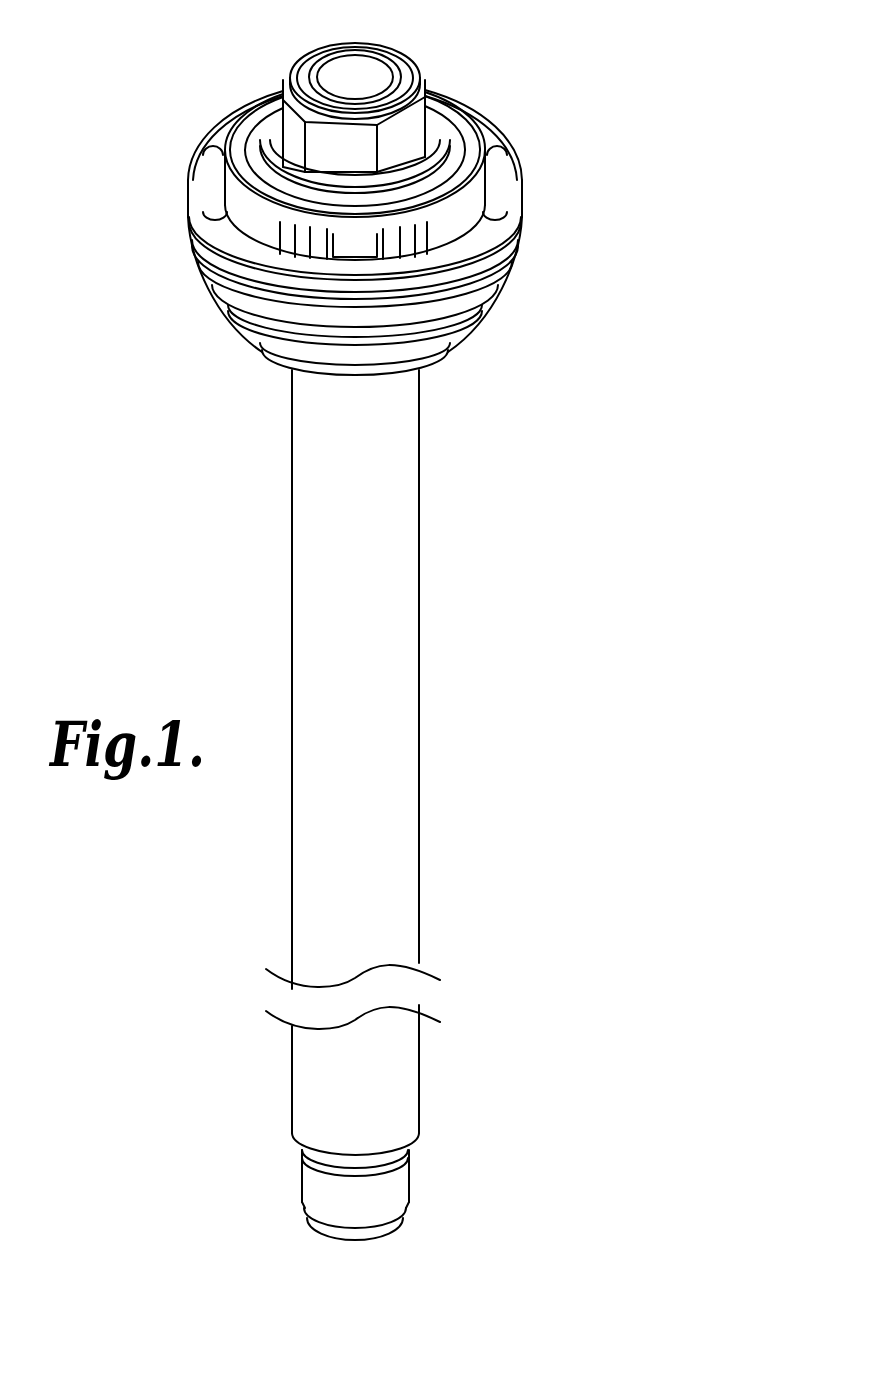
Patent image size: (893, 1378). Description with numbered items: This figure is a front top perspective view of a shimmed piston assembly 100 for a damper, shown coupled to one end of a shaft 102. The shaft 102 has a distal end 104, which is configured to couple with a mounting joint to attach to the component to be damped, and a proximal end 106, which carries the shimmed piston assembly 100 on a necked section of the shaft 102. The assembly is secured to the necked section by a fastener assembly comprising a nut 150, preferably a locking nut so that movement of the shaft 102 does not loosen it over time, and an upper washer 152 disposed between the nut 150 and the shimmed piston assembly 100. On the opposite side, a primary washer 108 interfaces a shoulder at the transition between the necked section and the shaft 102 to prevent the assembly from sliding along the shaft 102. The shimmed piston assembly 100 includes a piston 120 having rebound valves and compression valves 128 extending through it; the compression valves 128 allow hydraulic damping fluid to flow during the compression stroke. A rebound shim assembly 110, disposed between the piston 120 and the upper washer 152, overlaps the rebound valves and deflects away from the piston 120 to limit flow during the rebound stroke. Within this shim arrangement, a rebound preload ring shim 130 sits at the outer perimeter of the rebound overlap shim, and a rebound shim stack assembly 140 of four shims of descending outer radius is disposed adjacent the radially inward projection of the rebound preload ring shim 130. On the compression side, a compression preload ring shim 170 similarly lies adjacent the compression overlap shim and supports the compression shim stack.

The shimmed piston assembly 100 is at (666, 272).
The shaft 102 is at (420, 598).
The distal end 104 is at (407, 1177).
The proximal end 106 is at (363, 63).
The primary washer 108 is at (443, 353).
The rebound shim assembly 110 is at (517, 148).
The piston 120 is at (522, 182).
The compression valves 128 is at (500, 268).
The rebound preload ring shim 130 is at (433, 83).
The rebound shim stack assembly 140 is at (271, 108).
The nut 150 is at (417, 127).
The upper washer 152 is at (310, 177).
The compression preload ring shim 170 is at (500, 298).